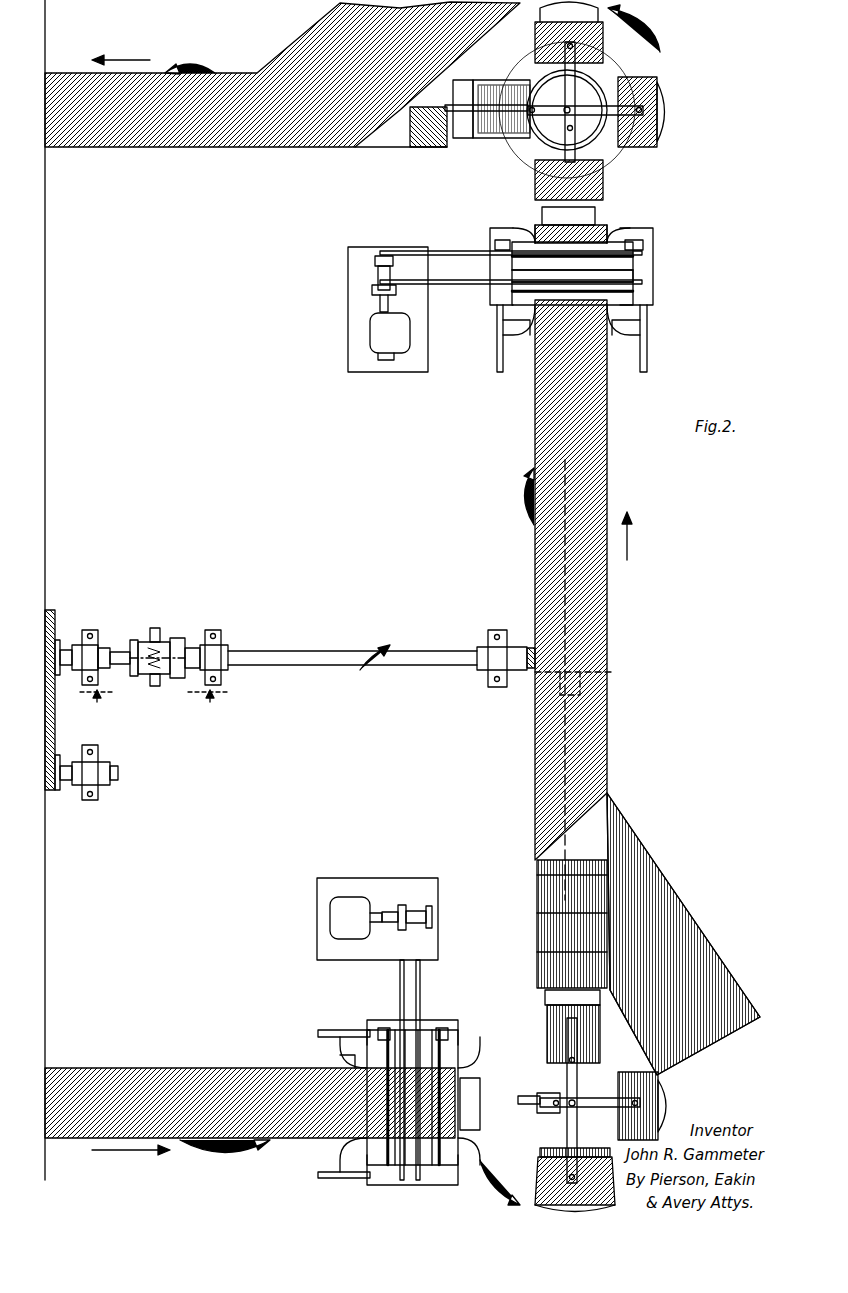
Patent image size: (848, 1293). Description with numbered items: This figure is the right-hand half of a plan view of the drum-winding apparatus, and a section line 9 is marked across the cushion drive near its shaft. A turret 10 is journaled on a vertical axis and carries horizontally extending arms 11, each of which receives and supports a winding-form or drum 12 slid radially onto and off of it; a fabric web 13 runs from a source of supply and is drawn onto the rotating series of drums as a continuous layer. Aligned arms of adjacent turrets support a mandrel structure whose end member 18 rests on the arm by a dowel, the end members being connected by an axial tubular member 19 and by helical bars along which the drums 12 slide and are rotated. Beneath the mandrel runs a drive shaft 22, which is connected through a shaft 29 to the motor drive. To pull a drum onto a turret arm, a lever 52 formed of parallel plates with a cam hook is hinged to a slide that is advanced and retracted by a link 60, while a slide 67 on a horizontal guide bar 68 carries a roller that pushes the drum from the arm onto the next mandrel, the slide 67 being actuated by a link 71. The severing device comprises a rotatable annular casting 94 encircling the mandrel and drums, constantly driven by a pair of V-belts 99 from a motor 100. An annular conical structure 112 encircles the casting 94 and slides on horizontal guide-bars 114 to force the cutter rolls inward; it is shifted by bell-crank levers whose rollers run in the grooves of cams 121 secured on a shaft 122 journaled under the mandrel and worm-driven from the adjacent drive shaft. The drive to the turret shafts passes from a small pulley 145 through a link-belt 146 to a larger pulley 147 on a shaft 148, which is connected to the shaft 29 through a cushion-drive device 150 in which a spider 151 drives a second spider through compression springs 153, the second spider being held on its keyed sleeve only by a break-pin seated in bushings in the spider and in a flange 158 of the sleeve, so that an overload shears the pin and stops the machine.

The section line 9 is at (154, 706).
The turret 10 is at (605, 80).
The arm 11 is at (545, 17).
The winding-form or drum 12 is at (595, 855).
The fabric web 13 is at (300, 52).
The end member 18 is at (465, 95).
The axial tubular member 19 is at (455, 138).
The shaft 22 is at (610, 742).
The shaft 29 is at (300, 656).
The lever 52 is at (555, 1115).
The link 60 is at (571, 609).
The slide 67 is at (525, 112).
The horizontal guide bar 68 is at (490, 130).
The link 71 is at (557, 112).
The annular casting 94 is at (620, 262).
The V-belt 99 is at (410, 255).
The motor 100 is at (380, 337).
The annular structure 112 is at (520, 278).
The horizontal guide-bar 114 is at (500, 243).
The cam 121 is at (495, 352).
The shaft 122 is at (535, 330).
The small pulley 145 is at (55, 795).
The link-belt 146 is at (55, 750).
The larger pulley 147 is at (60, 612).
The shaft 148 is at (68, 650).
The cushion-drive device 150 is at (182, 636).
The spider 151 is at (143, 634).
The compression spring 153 is at (148, 680).
The flange 158 is at (188, 682).